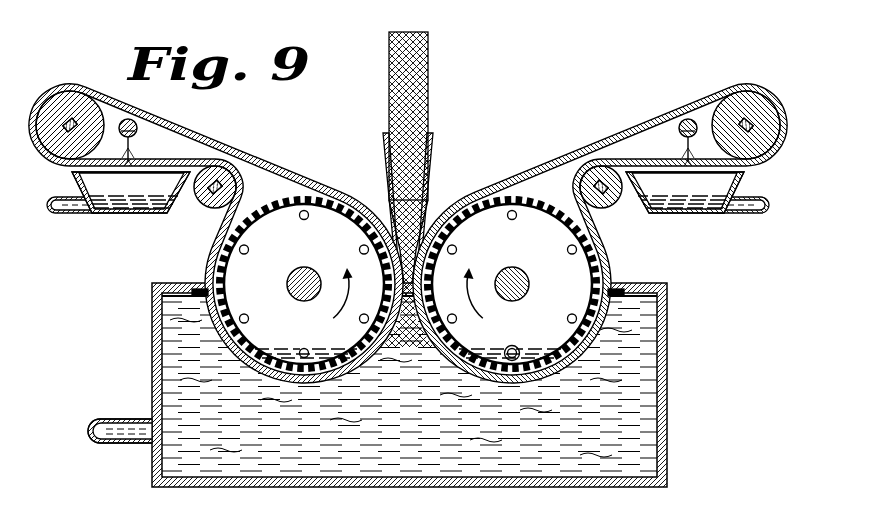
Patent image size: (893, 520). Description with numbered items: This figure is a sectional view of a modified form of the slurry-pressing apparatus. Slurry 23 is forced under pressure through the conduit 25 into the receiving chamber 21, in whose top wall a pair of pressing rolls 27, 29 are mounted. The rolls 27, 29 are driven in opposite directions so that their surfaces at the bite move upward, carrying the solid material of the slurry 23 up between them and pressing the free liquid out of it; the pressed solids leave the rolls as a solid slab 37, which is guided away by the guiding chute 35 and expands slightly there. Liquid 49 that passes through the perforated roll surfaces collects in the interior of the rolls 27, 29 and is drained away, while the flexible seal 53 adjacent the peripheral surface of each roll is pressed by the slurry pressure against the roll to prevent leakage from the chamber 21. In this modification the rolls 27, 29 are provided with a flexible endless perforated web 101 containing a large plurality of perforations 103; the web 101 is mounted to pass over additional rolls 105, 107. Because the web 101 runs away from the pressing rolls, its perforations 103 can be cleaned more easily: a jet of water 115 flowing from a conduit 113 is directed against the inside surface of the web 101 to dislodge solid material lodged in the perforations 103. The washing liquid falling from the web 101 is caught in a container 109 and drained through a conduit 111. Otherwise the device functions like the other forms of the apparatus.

The receiving chamber 21 is at (664, 357).
The slurry 23 is at (662, 394).
The conduit 25 is at (121, 446).
The pressing roll 27 is at (472, 210).
The pressing roll 29 is at (329, 213).
The guiding chute 35 is at (436, 151).
The solid slab 37 is at (430, 102).
The liquid 49 is at (527, 351).
The seal 53 is at (632, 288).
The flexible endless perforated web 101 is at (283, 169).
The perforations 103 is at (260, 156).
The roll 105 is at (101, 100).
The roll 107 is at (201, 206).
The container 109 is at (127, 215).
The conduit 111 is at (66, 208).
The conduit 113 is at (137, 129).
The jet of water 115 is at (134, 148).